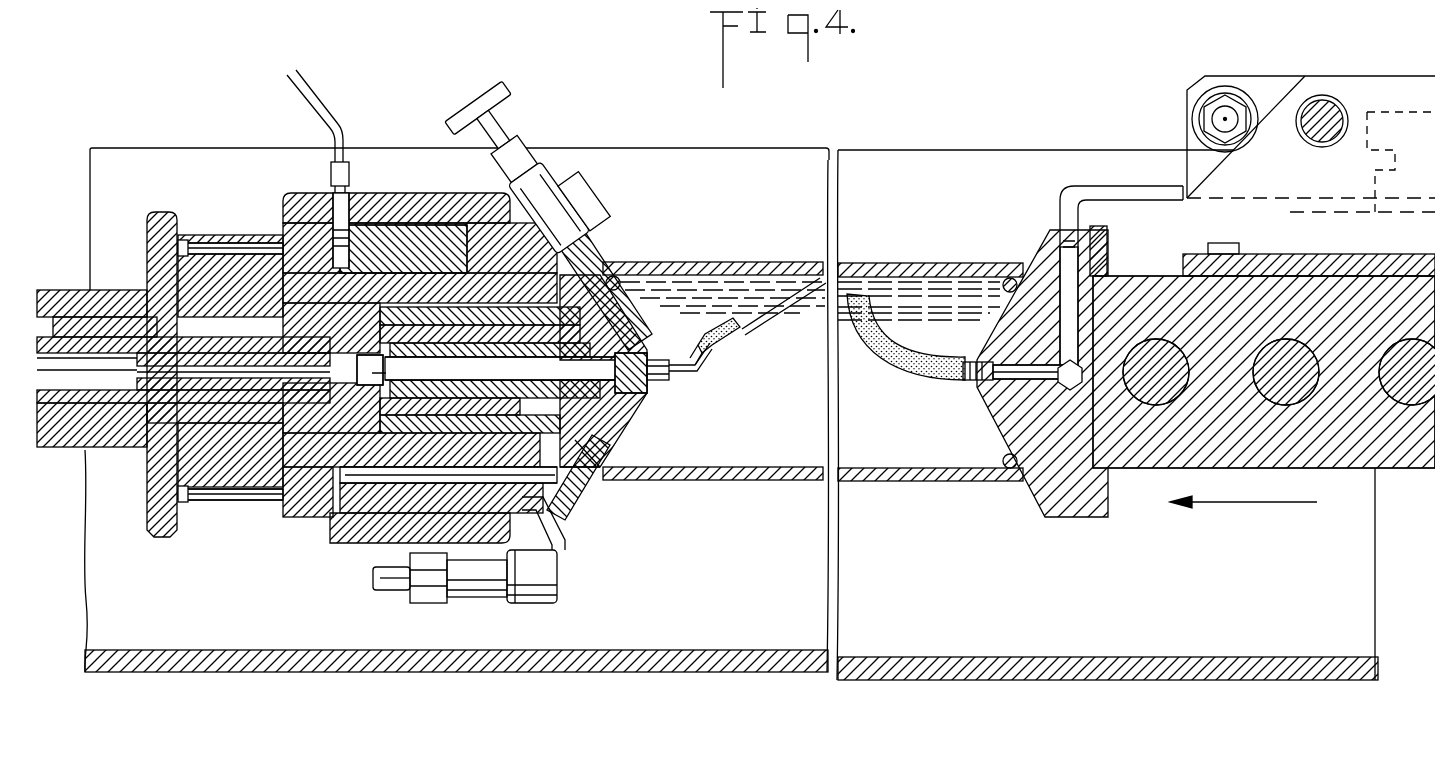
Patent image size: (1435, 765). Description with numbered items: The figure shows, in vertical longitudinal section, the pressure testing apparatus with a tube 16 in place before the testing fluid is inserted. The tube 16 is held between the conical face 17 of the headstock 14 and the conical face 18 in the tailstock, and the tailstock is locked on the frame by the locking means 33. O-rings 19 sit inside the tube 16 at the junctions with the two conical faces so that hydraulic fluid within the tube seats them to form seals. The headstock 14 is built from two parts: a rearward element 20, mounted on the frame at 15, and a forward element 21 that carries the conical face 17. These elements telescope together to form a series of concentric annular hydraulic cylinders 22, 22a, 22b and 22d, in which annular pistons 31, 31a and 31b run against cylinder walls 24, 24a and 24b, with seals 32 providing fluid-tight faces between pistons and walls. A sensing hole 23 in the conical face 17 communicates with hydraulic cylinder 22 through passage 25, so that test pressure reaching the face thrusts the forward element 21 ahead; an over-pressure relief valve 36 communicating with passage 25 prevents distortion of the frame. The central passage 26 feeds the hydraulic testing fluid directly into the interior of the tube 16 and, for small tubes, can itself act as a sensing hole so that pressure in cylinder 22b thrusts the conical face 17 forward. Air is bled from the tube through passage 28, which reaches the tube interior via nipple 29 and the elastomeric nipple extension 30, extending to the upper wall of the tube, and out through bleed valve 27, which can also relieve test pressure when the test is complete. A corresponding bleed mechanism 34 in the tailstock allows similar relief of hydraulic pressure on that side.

The headstock 14 is at (453, 176).
The mounting of headstock on frame 15 is at (145, 516).
The tube 16 is at (729, 263).
The headstock conical face 17 is at (632, 418).
The tailstock conical face 18 is at (993, 427).
The O-rings 19 is at (619, 272).
The rearward element of headstock 20 is at (287, 543).
The forward element of headstock 21 is at (522, 507).
The hydraulic cylinder 22 is at (307, 551).
The hydraulic cylinder 22a is at (624, 494).
The hydraulic cylinder 22b is at (384, 370).
The hydraulic cylinder 22d is at (643, 333).
The sensing hole 23 is at (622, 447).
The cylinder wall 24 is at (466, 520).
The cylinder wall 24a is at (460, 390).
The cylinder wall 24b is at (495, 382).
The passage 25 is at (368, 484).
The passage 26 is at (647, 393).
The bleed valve 27 is at (580, 190).
The passage 28 is at (632, 315).
The nipple 29 is at (695, 368).
The nipple extension 30 is at (760, 322).
The annular piston 31 is at (380, 517).
The annular piston 31a is at (416, 308).
The annular piston 31b is at (485, 344).
The seals 32 is at (572, 500).
The locking means 33 is at (1157, 405).
The tailstock bleed mechanism 34 is at (904, 372).
The over-pressure relief valve 36 is at (557, 600).